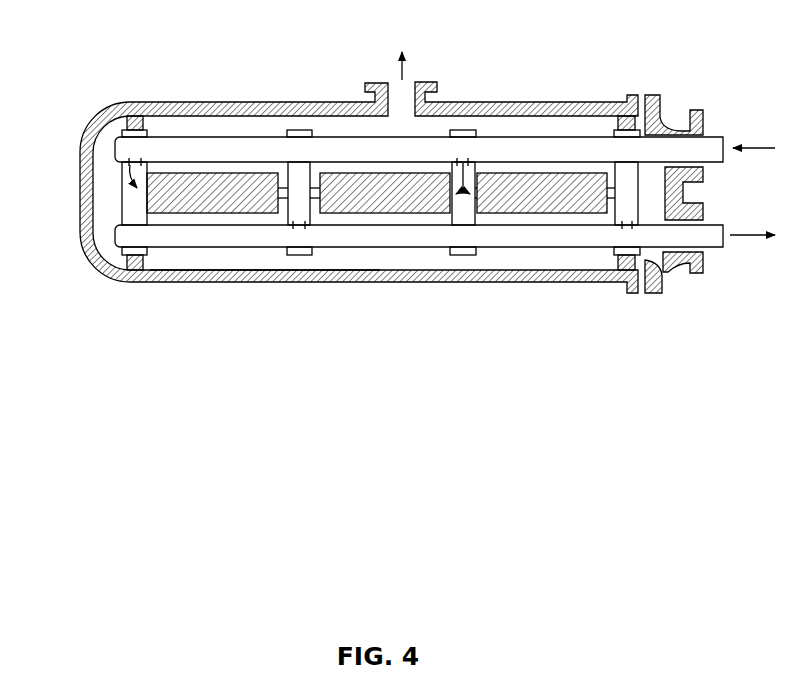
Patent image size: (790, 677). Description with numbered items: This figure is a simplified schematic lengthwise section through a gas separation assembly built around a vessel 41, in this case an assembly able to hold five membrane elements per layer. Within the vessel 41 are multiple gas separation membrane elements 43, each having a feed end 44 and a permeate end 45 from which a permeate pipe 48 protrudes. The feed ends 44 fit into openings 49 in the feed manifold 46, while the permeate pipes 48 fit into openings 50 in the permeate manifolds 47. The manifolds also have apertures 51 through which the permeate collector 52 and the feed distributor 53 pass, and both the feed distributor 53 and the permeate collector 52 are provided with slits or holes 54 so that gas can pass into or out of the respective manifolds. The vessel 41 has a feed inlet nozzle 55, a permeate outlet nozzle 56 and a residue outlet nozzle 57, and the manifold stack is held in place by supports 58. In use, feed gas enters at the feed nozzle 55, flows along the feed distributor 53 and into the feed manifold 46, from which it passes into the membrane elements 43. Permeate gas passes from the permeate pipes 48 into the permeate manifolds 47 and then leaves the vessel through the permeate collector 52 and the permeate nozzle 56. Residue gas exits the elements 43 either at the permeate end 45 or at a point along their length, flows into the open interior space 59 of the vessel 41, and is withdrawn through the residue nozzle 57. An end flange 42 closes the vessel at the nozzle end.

The vessel 41 is at (157, 88).
The end flange 42 is at (705, 262).
The gas separation membrane elements 43 is at (160, 215).
The feed end 44 is at (142, 208).
The permeate end 45 is at (283, 222).
The feed manifold 46 is at (478, 250).
The permeate manifolds 47 is at (317, 256).
The permeate pipe 48 is at (607, 200).
The openings 49 is at (460, 205).
The openings 50 is at (615, 190).
The apertures 51 is at (636, 236).
The permeate collector 52 is at (525, 250).
The feed distributor 53 is at (568, 136).
The slits or holes 54 is at (125, 158).
The feed inlet nozzle 55 is at (695, 110).
The permeate outlet nozzle 56 is at (695, 273).
The residue outlet nozzle 57 is at (427, 82).
The supports 58 is at (118, 283).
The open interior space 59 is at (212, 258).